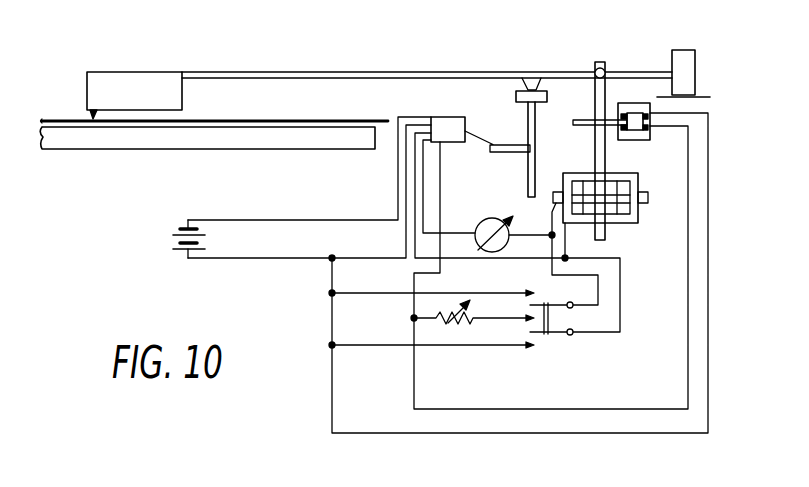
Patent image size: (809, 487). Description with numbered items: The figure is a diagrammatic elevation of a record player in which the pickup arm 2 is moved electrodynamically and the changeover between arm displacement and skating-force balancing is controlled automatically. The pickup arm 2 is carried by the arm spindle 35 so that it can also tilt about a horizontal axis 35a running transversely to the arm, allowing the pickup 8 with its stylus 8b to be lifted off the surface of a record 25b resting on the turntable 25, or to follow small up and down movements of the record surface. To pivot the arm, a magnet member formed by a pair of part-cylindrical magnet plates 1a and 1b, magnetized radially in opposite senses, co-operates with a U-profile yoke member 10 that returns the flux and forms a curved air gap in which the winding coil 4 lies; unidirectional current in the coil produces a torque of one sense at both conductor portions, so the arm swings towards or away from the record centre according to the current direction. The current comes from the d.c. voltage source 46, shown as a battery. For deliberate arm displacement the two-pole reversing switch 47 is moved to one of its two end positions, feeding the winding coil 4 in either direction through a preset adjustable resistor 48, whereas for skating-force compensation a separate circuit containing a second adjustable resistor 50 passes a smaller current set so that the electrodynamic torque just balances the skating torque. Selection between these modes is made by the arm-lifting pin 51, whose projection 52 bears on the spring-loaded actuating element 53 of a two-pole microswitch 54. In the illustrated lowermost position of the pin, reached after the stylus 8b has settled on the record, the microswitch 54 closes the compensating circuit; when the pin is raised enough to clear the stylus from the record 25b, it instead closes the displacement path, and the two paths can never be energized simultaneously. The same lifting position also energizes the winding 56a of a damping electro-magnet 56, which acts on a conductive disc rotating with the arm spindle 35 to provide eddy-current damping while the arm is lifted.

The pickup arm 2 is at (381, 73).
The pickup 8 is at (138, 75).
The stylus 8b is at (89, 117).
The turntable 25 is at (328, 137).
The record 25b is at (278, 121).
The actuating element 53 is at (473, 132).
The two-pole microswitch 54 is at (447, 150).
The projection 52 is at (500, 153).
The arm-lifting pin 51 is at (528, 120).
The arm spindle 35 is at (595, 80).
The horizontal axis 35a is at (604, 69).
The magnet plate 1a is at (584, 126).
The magnet plate 1b is at (616, 180).
The damping electro-magnet 56 is at (650, 138).
The winding 56a is at (650, 105).
The yoke member 10 is at (648, 196).
The winding coil 4 is at (639, 216).
The d.c. voltage source 46 is at (170, 240).
The adjustable resistor 50 is at (487, 218).
The adjustable resistor 48 is at (447, 331).
The two-pole reversing switch 47 is at (547, 337).